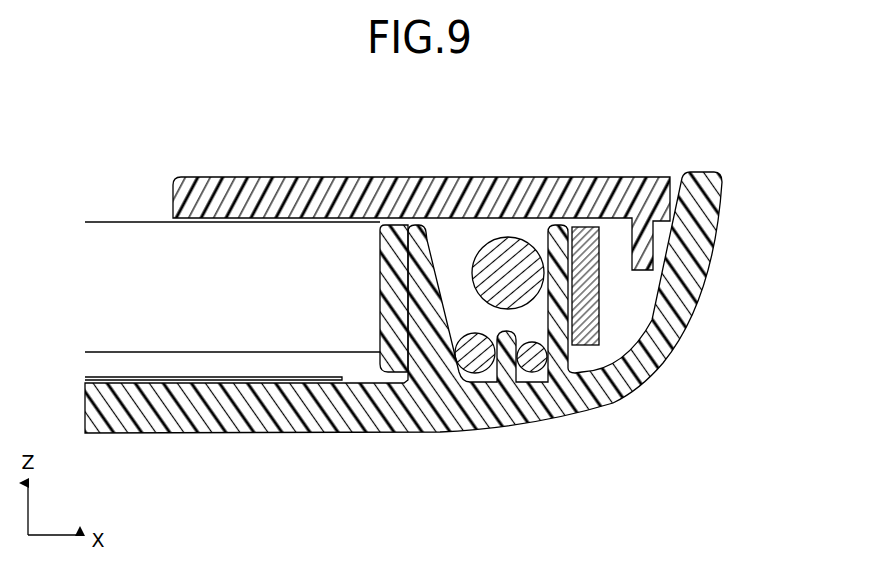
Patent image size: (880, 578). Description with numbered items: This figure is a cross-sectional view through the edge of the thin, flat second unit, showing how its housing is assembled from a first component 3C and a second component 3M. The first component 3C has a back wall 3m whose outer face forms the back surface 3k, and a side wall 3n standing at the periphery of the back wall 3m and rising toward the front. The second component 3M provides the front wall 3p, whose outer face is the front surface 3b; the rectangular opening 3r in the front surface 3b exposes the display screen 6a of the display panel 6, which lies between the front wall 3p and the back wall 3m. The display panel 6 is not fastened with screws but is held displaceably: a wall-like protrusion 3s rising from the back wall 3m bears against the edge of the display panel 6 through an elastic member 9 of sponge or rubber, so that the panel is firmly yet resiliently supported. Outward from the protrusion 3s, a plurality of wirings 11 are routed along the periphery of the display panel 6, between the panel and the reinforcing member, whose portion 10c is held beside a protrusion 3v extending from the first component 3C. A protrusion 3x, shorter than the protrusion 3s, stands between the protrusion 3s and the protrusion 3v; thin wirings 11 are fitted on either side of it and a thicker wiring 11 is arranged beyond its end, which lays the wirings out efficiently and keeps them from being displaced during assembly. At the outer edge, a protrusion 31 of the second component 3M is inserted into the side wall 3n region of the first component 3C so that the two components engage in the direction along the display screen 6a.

The front surface 3b is at (260, 178).
The second component 3M is at (225, 172).
The opening 3r is at (173, 198).
The front wall 3p is at (318, 197).
The protrusion 31 is at (643, 258).
The display screen 6a is at (122, 223).
The display panel 6 is at (282, 358).
The elastic member 9 is at (393, 243).
The protrusion 3s is at (420, 243).
The wiring 11 is at (507, 247).
The protrusion 3x is at (507, 352).
The protrusion 3v is at (558, 237).
The reinforcing member portion 10c is at (587, 233).
The side wall 3n is at (695, 288).
The back surface 3k is at (127, 433).
The back wall 3m is at (180, 425).
The first component 3C is at (230, 437).